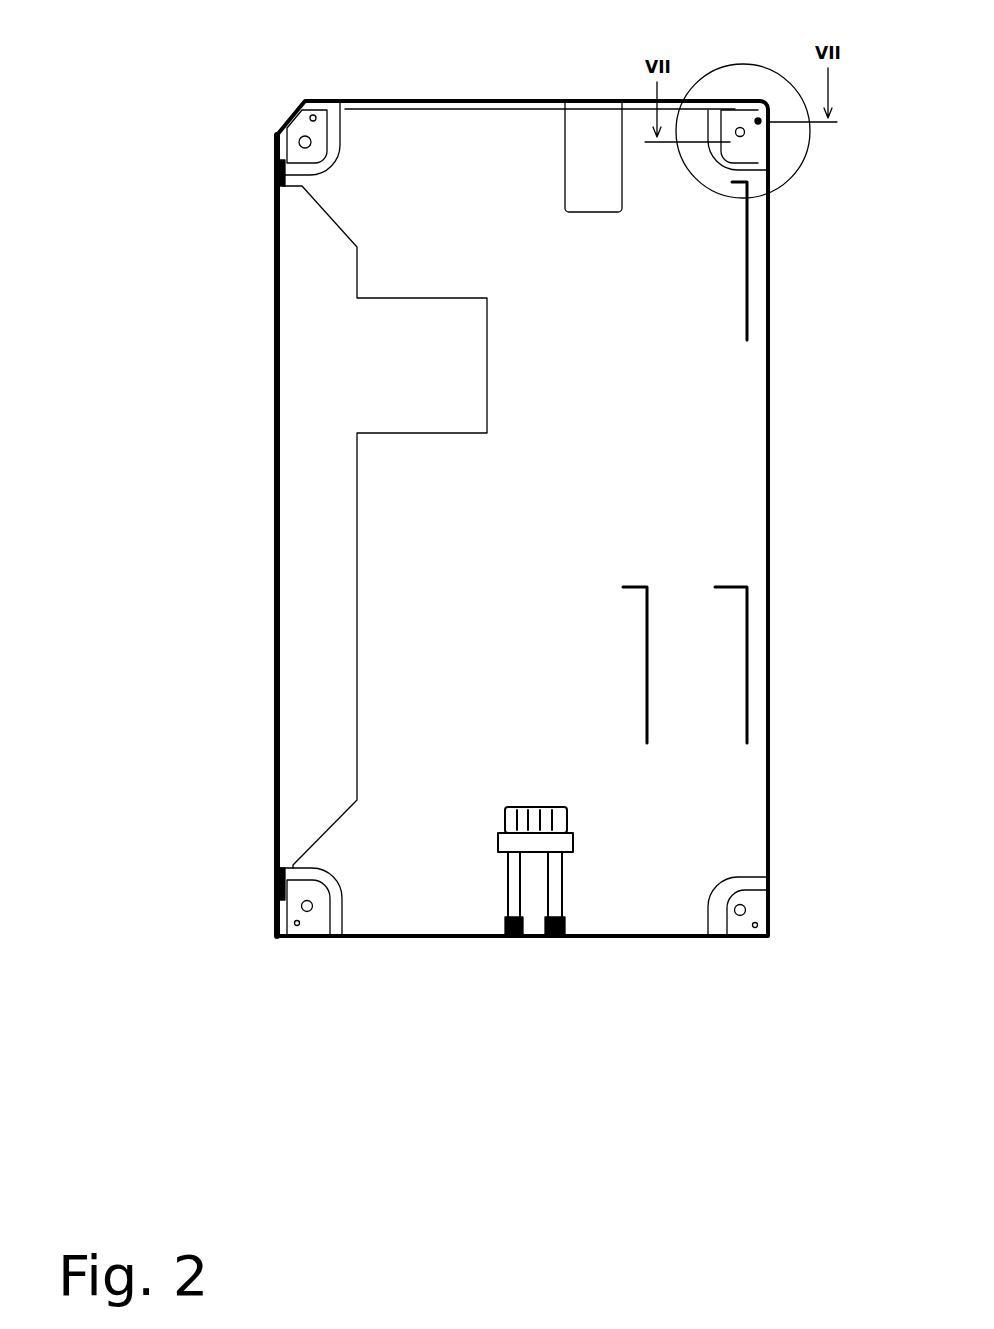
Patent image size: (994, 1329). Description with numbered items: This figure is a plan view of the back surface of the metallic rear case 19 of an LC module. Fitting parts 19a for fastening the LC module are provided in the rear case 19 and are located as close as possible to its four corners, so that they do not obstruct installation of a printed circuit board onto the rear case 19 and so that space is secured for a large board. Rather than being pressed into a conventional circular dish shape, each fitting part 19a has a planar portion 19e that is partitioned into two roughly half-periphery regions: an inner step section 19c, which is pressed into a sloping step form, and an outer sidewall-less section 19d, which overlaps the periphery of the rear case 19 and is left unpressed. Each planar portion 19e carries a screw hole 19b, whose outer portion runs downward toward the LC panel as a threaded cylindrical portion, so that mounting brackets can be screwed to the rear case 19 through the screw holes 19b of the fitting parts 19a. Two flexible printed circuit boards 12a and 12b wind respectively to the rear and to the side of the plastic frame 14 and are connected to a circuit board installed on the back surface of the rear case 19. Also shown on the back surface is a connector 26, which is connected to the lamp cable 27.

The flexible printed circuit board 12a is at (593, 173).
The flexible printed circuit board 12b is at (414, 366).
The plastic frame 14 is at (277, 150).
The rear case 19 is at (687, 448).
The fitting parts 19a is at (274, 118).
The screw holes 19b is at (285, 173).
The step section 19c is at (350, 103).
The sidewall-less section 19d is at (300, 118).
The planar portion 19e is at (758, 187).
The connector 26 is at (535, 842).
The lamp cable 27 is at (560, 898).